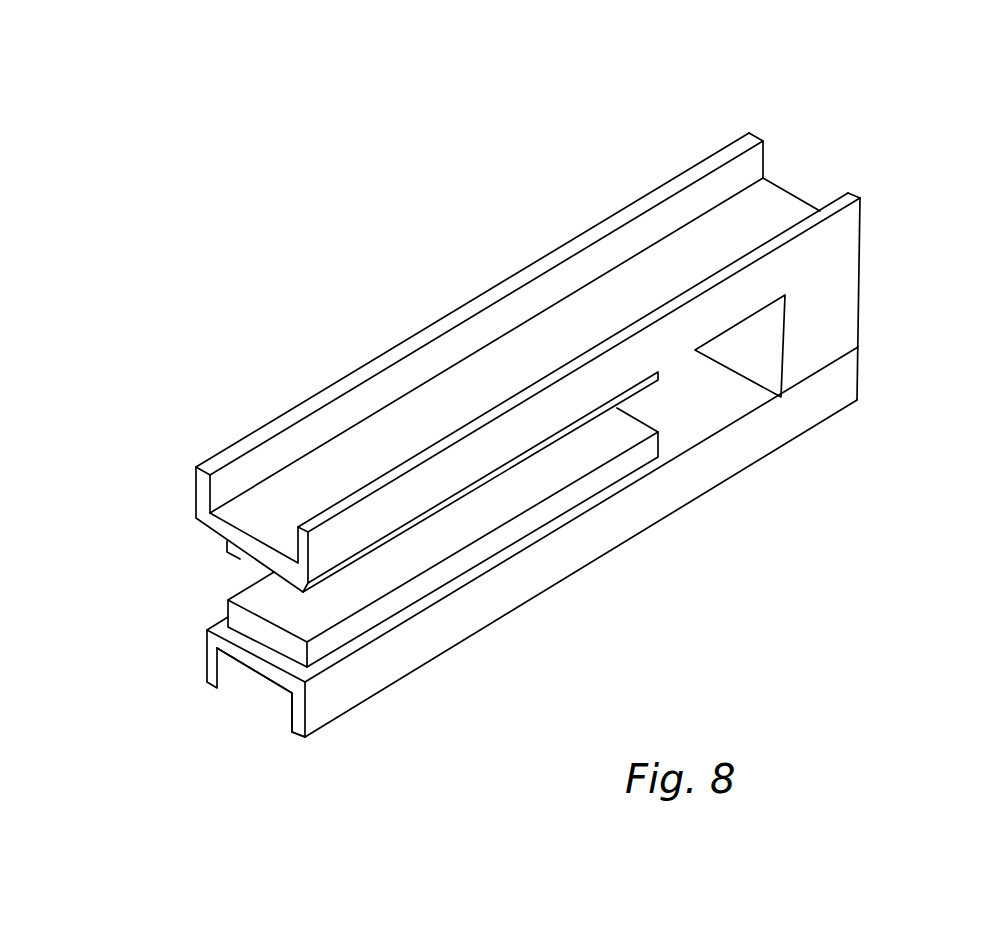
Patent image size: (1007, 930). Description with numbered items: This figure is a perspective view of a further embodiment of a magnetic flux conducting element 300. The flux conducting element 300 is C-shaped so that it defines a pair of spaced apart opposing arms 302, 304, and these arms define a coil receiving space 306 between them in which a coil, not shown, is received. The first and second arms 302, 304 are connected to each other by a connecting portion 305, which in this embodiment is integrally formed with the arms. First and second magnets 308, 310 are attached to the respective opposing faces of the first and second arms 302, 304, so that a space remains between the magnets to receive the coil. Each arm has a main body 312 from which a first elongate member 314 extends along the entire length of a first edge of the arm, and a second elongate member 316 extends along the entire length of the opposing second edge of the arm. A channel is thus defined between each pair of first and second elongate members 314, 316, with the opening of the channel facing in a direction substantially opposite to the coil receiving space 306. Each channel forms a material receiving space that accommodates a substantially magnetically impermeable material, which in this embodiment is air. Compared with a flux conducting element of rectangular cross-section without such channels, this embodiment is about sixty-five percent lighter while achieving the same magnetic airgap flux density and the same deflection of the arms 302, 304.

The magnetic flux conducting element 300 is at (767, 85).
The first arm 302 is at (528, 442).
The second arm 304 is at (469, 542).
The connecting portion 305 is at (826, 306).
The coil receiving space 306 is at (240, 577).
The first magnet 308 is at (238, 556).
The second magnet 310 is at (228, 622).
The main body 312 is at (776, 213).
The first elongate member 314 is at (732, 183).
The second elongate member 316 is at (386, 511).